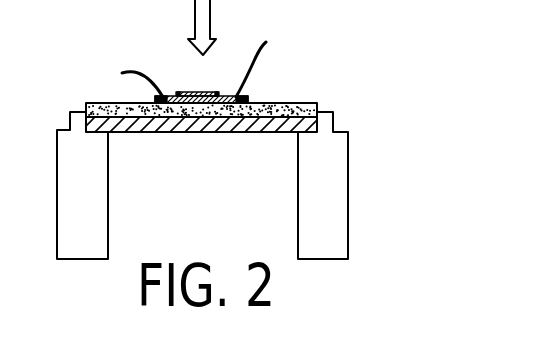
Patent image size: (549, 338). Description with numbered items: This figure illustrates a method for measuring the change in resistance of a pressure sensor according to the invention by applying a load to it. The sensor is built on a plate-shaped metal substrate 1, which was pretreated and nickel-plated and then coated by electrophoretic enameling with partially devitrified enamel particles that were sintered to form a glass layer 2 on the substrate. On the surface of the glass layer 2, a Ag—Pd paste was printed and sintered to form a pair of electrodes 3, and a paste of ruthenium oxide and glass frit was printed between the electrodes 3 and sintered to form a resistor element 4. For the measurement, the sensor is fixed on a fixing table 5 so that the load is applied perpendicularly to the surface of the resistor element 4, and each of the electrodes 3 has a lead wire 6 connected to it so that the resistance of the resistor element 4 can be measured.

The metal substrate 1 is at (112, 120).
The glass layer 2 is at (317, 103).
The electrodes 3 is at (247, 99).
The resistor element 4 is at (197, 92).
The fixing table 5 is at (332, 173).
The lead wire 6 is at (133, 72).